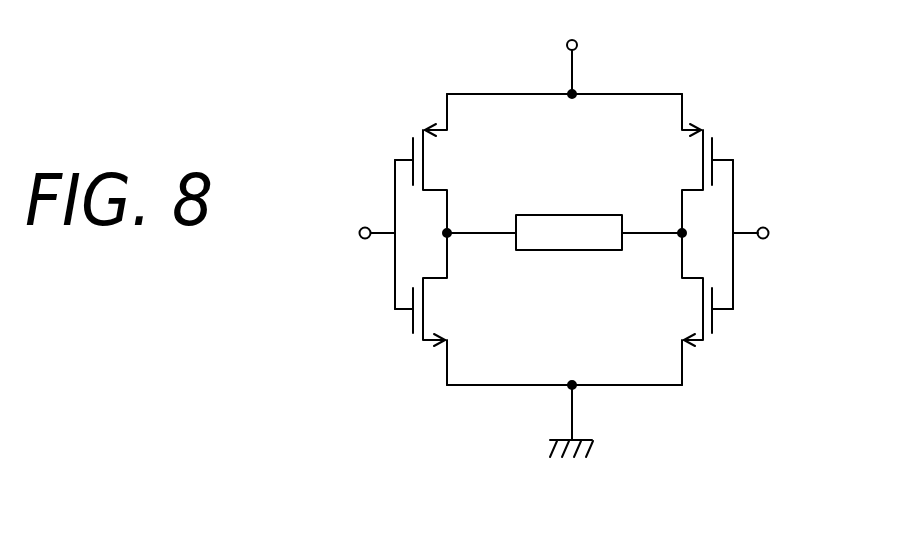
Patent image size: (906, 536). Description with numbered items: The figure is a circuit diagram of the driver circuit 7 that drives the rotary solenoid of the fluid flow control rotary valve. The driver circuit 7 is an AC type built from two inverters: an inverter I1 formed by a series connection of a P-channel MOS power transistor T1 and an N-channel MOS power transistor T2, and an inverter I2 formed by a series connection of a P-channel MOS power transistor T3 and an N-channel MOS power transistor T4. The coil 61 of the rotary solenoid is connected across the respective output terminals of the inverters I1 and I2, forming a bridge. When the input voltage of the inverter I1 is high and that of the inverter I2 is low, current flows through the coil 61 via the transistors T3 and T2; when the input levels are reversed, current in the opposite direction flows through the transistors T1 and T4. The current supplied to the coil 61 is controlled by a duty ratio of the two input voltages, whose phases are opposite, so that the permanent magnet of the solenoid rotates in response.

The driver circuit 7 is at (565, 230).
The coil 61 is at (565, 238).
The P-channel MOS power transistor T1 is at (432, 163).
The N-channel MOS power transistor T2 is at (433, 309).
The P-channel MOS power transistor T3 is at (694, 163).
The N-channel MOS power transistor T4 is at (694, 309).
The inverter I1 is at (432, 362).
The inverter I2 is at (705, 358).